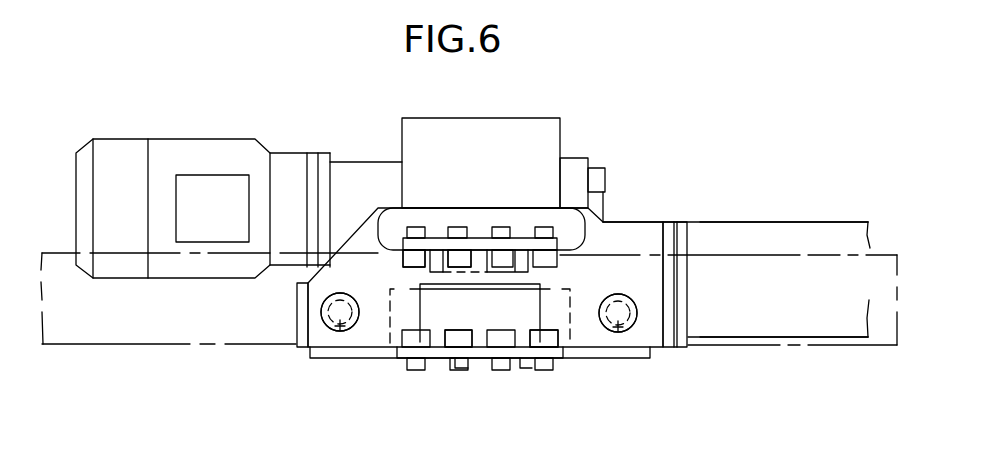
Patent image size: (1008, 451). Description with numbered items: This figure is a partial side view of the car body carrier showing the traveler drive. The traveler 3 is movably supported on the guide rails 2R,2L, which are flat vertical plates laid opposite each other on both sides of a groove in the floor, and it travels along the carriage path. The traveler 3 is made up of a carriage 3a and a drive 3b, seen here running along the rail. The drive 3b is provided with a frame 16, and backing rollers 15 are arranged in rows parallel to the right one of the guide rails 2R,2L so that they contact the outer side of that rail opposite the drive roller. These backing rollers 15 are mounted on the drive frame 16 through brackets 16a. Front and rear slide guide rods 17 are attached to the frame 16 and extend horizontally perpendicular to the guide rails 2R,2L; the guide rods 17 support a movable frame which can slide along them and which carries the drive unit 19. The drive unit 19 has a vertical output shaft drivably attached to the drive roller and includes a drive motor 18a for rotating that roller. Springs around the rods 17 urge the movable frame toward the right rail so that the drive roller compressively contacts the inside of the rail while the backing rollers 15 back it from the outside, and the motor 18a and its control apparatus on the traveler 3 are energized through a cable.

The guide rails 2R,2L is at (808, 346).
The traveler 3 is at (700, 212).
The carriage 3a is at (793, 219).
The drive 3b is at (627, 220).
The backing rollers 15 is at (456, 258).
The frame 16 is at (360, 243).
The brackets 16a is at (520, 247).
The slide guide rods 17 is at (340, 332).
The drive motor 18a is at (192, 160).
The drive unit 19 is at (478, 147).